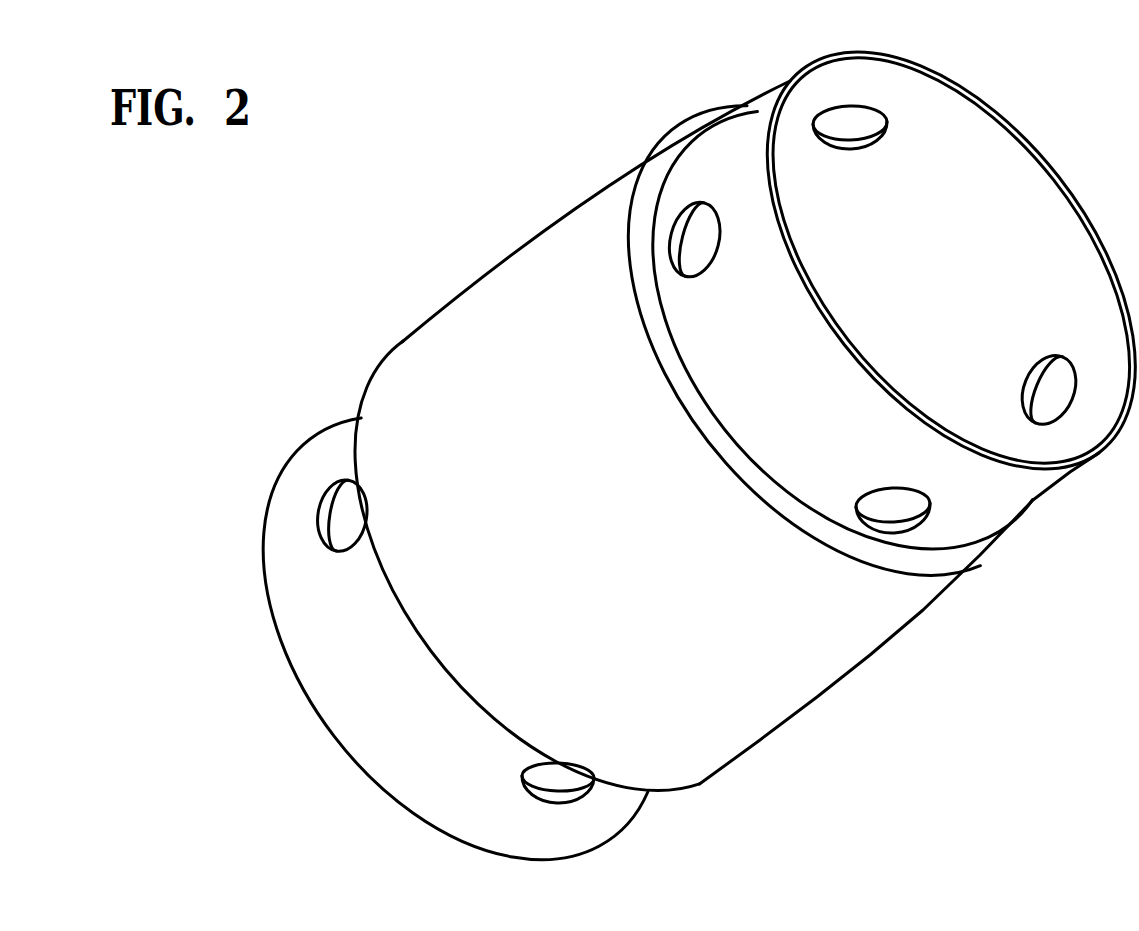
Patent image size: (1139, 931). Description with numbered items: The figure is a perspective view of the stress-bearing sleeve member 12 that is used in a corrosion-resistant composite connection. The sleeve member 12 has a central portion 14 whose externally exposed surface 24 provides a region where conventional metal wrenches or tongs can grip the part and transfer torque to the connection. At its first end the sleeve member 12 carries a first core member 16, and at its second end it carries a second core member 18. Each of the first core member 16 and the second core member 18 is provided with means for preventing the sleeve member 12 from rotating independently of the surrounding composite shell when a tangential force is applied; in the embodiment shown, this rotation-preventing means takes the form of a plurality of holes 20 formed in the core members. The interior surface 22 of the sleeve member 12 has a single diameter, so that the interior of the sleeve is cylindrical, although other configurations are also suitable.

The stress-bearing sleeve member 12 is at (437, 276).
The central portion 14 is at (817, 697).
The first core member 16 is at (995, 102).
The second core member 18 is at (400, 807).
The holes 20 is at (691, 203).
The interior surface 22 is at (966, 262).
The externally exposed surface 24 is at (572, 504).